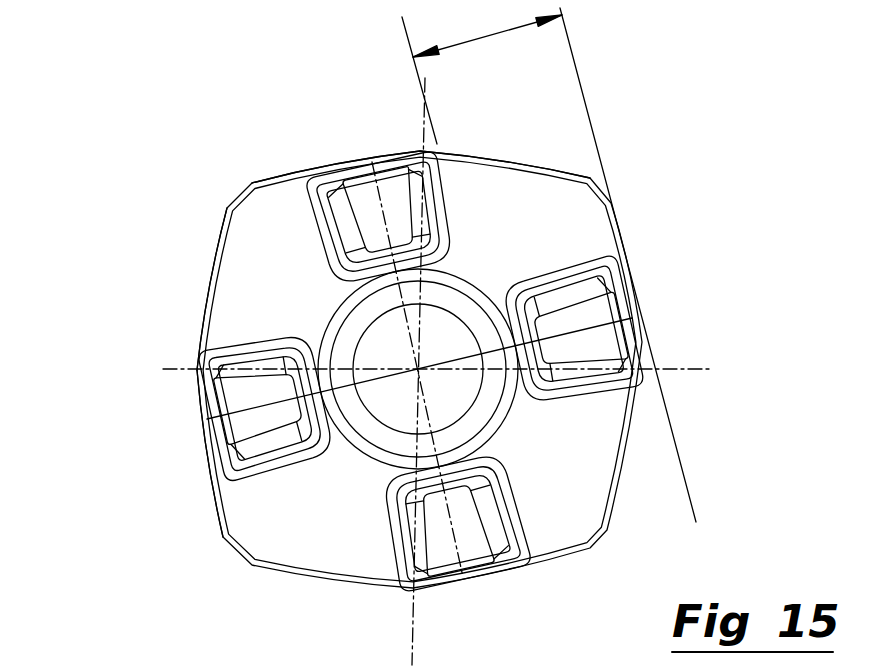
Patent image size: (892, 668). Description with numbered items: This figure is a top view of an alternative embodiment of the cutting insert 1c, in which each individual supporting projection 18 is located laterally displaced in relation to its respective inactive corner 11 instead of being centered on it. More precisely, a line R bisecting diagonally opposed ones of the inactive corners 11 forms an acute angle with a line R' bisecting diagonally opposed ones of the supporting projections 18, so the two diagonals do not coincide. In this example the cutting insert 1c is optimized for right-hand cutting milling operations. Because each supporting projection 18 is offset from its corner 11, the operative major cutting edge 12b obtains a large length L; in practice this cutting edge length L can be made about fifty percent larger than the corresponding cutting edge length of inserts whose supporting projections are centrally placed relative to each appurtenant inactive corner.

The cutting insert 1c is at (198, 257).
The inactive corner 11 is at (421, 147).
The operative major cutting edge 12b is at (497, 163).
The supporting projection 18 is at (365, 208).
The line bisecting diagonally opposed inactive corners R is at (176, 289).
The line bisecting diagonally opposed supporting projections R' is at (197, 453).
The length of operative major cutting edge L is at (487, 28).